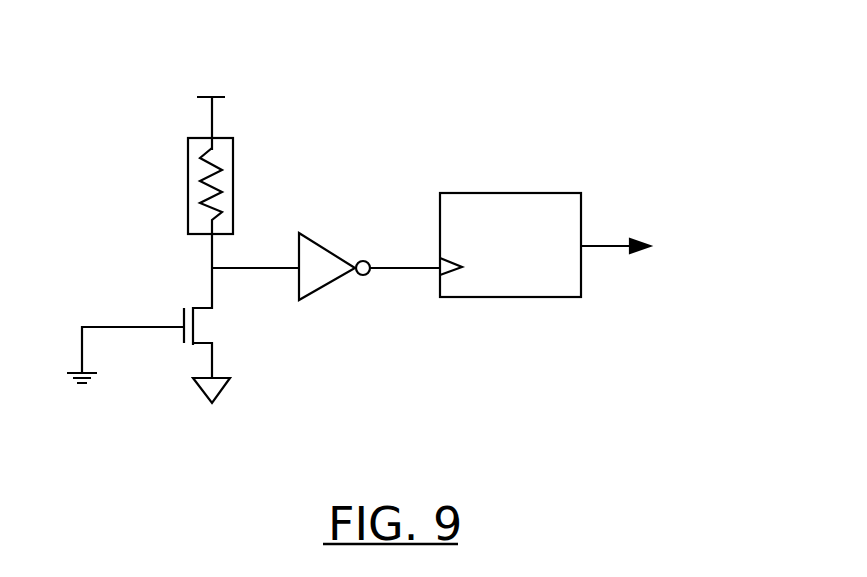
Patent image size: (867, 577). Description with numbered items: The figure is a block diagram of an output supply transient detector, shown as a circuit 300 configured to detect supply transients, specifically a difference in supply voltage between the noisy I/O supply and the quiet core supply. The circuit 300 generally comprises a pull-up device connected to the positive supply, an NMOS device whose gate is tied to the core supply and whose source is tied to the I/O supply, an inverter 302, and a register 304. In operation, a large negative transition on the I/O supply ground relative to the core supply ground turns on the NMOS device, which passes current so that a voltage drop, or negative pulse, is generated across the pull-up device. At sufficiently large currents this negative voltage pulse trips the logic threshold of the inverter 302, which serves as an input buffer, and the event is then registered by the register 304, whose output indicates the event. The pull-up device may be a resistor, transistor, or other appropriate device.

The circuit 300 is at (132, 62).
The inverter 302 is at (313, 240).
The register 304 is at (547, 192).